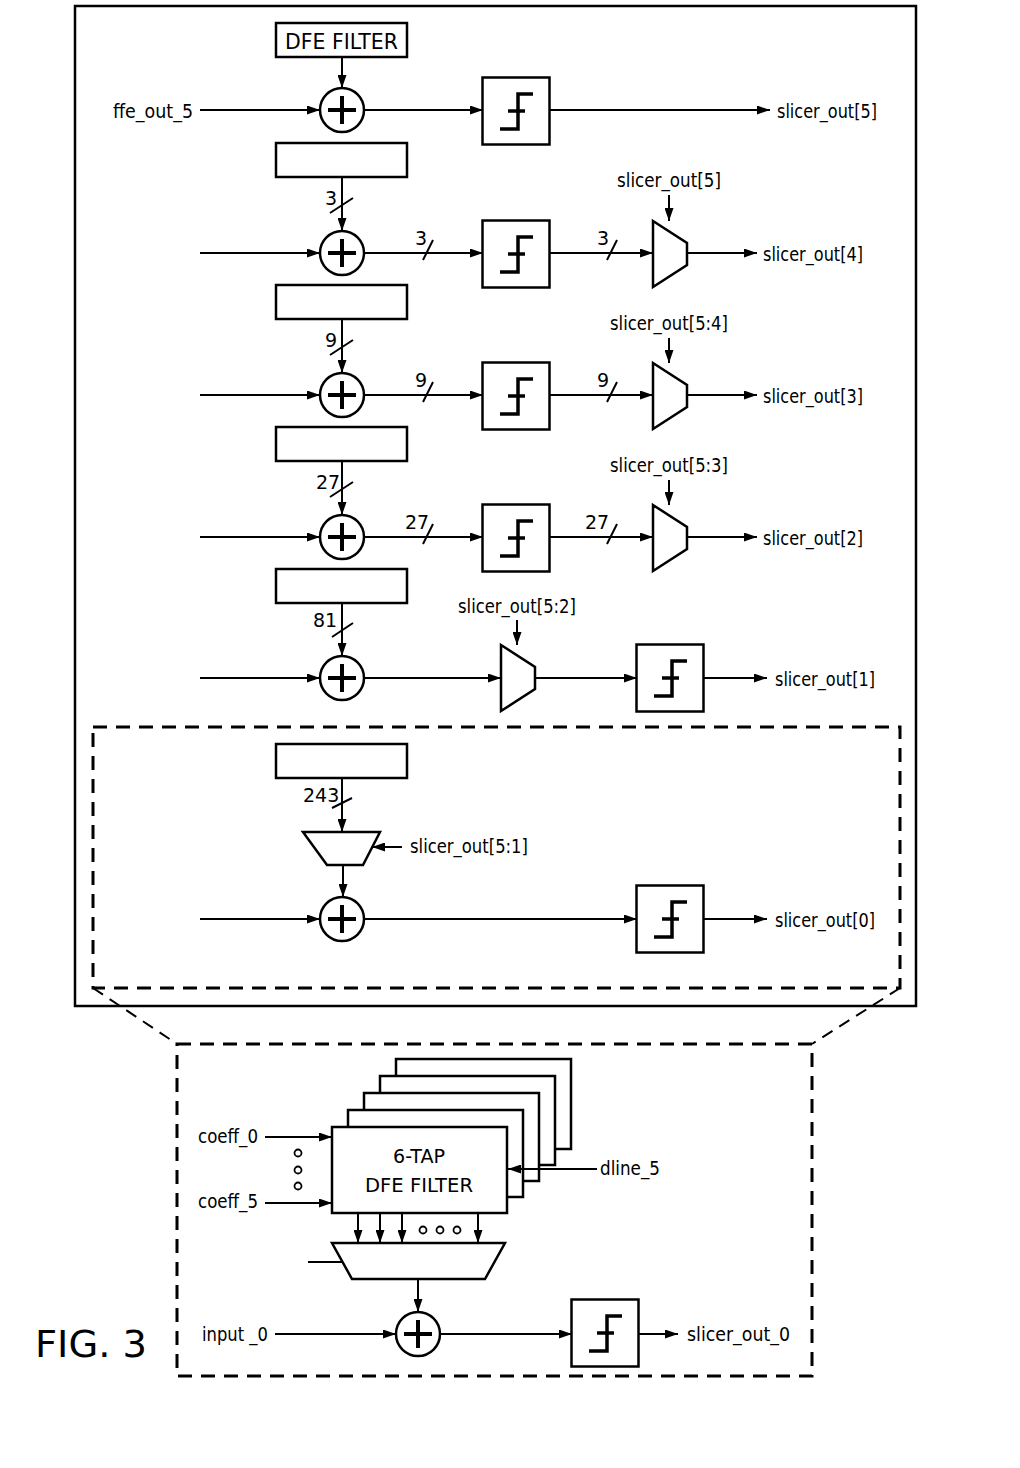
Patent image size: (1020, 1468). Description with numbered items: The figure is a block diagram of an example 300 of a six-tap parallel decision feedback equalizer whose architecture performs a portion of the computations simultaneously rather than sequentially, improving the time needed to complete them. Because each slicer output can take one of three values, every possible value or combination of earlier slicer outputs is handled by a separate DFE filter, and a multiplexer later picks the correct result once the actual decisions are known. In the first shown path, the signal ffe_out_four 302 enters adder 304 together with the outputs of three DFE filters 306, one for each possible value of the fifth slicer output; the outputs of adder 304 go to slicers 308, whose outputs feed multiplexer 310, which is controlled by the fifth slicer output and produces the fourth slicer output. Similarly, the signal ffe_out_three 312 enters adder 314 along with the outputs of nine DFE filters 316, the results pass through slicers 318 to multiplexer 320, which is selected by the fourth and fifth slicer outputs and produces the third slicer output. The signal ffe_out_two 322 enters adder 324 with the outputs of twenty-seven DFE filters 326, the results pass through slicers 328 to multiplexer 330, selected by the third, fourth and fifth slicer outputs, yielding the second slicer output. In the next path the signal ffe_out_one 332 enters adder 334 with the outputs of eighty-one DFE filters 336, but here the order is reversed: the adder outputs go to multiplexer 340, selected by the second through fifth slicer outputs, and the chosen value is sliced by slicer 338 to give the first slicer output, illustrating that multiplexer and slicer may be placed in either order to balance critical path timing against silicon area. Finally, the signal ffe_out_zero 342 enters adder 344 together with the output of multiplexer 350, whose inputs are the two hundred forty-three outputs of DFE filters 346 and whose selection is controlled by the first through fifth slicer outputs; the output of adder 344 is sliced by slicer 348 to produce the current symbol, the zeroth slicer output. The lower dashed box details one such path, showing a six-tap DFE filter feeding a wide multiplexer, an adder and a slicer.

The 6-tap parallel DFE 300 is at (118, 1062).
The signal ffe_out_4 302 is at (223, 251).
The adder 304 is at (383, 222).
The DFE filters 306 is at (276, 160).
The slicers 308 is at (528, 220).
The multiplexer 310 is at (652, 272).
The signal ffe_out_3 312 is at (223, 393).
The adder 314 is at (383, 364).
The DFE filters 316 is at (276, 302).
The slicers 318 is at (528, 362).
The multiplexer 320 is at (652, 414).
The signal ffe_out_2 322 is at (223, 535).
The adder 324 is at (383, 506).
The DFE filters 326 is at (276, 444).
The slicers 328 is at (528, 504).
The multiplexer 330 is at (652, 556).
The signal ffe_out_1 332 is at (222, 676).
The adder 334 is at (358, 661).
The DFE filters 336 is at (276, 586).
The slicer 338 is at (680, 645).
The multiplexer 340 is at (500, 660).
The signal ffe_out_0 342 is at (222, 926).
The adder 344 is at (325, 935).
The DFE filters 346 is at (277, 758).
The slicer 348 is at (680, 886).
The multiplexer 350 is at (313, 847).